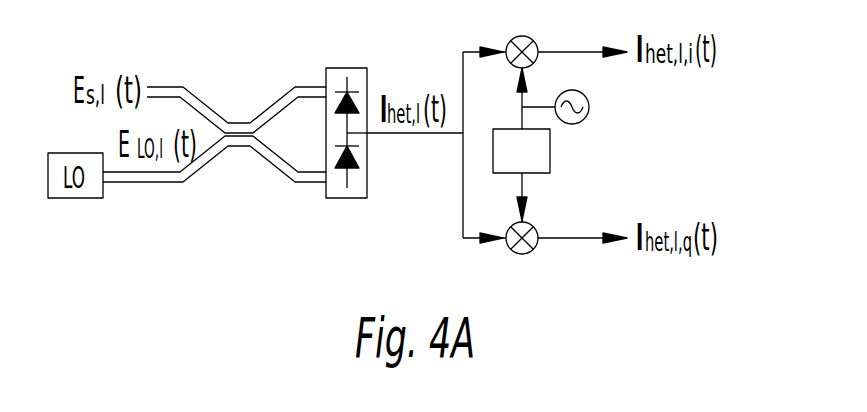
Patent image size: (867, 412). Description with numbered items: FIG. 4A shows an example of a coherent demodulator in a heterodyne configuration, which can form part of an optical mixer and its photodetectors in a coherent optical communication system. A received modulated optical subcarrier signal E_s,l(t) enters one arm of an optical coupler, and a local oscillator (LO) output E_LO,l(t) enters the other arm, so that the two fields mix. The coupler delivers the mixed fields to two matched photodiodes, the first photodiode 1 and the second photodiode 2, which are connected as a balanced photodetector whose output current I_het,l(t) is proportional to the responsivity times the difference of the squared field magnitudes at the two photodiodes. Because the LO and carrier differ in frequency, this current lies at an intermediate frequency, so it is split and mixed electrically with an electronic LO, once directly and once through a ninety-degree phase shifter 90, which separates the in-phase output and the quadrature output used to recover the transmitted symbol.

The first output port of optical coupler (to first photodiode) 1 is at (288, 89).
The second output port of optical coupler (to second photodiode) 2 is at (288, 156).
The 90 degree phase shifter 90 is at (521, 151).